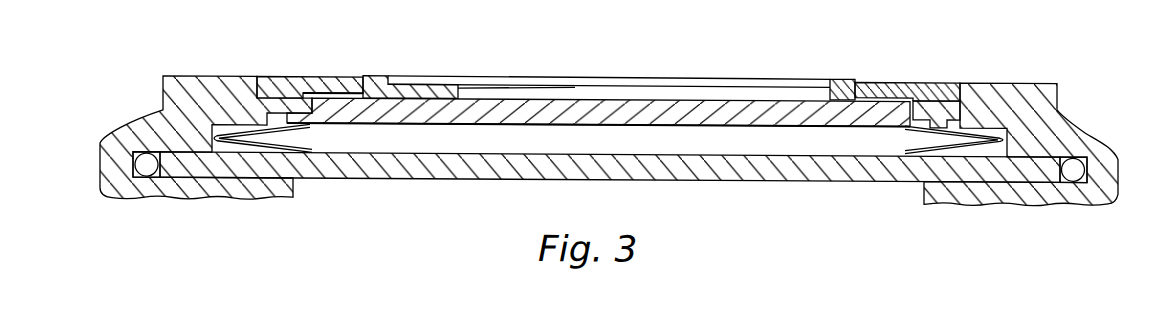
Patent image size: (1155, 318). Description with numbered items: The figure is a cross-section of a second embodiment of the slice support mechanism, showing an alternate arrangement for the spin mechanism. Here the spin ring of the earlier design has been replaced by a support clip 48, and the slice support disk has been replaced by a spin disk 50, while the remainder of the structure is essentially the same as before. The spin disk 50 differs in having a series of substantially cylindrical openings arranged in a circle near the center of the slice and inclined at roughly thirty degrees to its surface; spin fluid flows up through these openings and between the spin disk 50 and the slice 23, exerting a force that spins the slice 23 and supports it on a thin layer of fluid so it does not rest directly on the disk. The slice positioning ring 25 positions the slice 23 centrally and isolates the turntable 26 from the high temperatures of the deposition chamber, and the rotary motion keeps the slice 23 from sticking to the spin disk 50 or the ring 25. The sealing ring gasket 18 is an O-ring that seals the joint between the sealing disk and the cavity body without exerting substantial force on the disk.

The sealing ring gasket 18 is at (1075, 168).
The slice 23 is at (623, 94).
The slice positioning ring 25 is at (843, 80).
The turntable 26 is at (948, 84).
The support clip 48 is at (312, 128).
The spin disk 50 is at (508, 107).